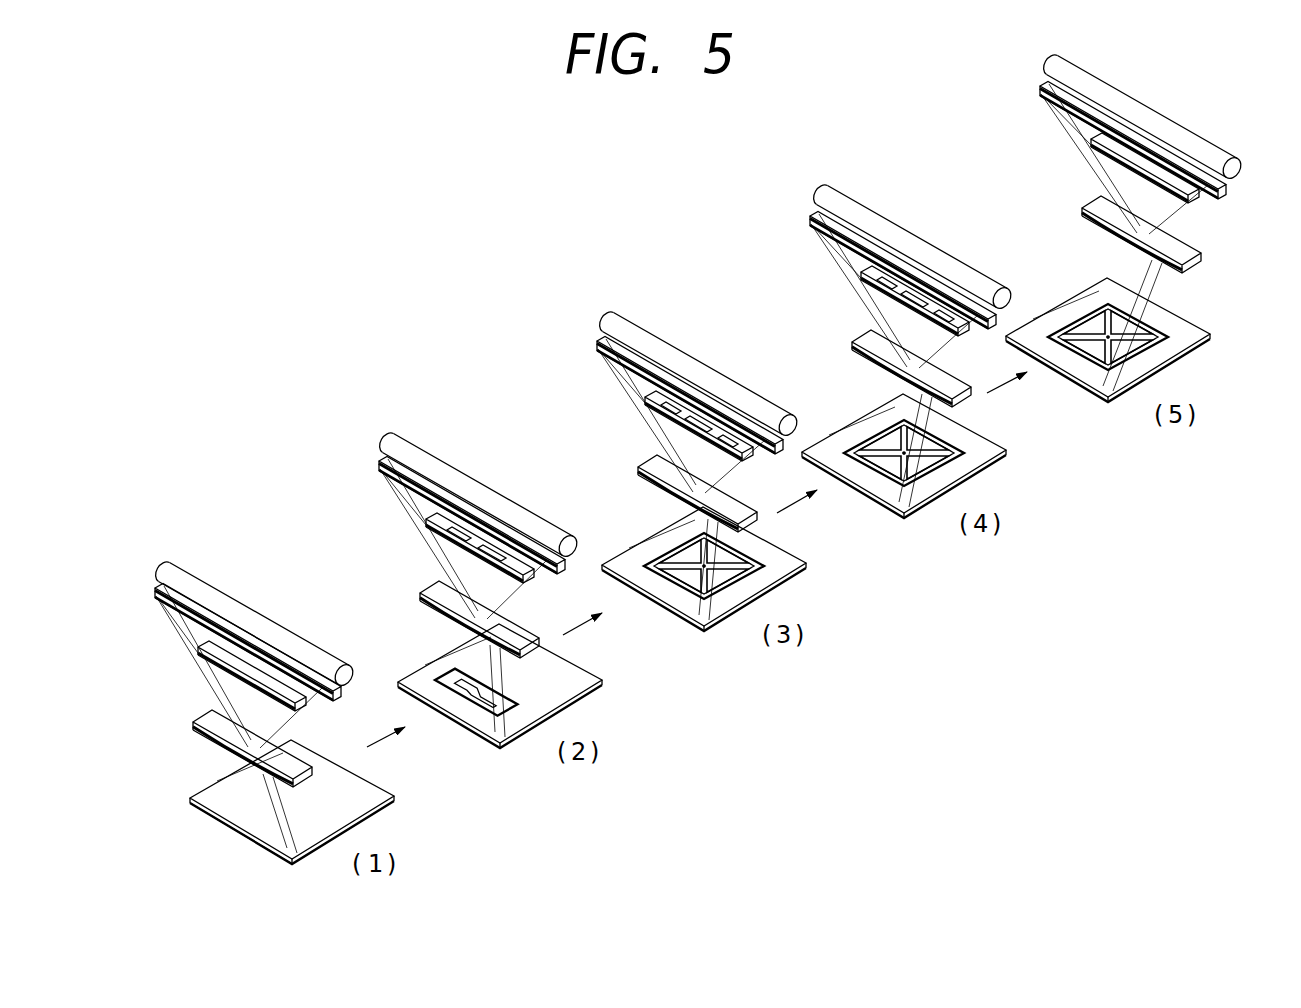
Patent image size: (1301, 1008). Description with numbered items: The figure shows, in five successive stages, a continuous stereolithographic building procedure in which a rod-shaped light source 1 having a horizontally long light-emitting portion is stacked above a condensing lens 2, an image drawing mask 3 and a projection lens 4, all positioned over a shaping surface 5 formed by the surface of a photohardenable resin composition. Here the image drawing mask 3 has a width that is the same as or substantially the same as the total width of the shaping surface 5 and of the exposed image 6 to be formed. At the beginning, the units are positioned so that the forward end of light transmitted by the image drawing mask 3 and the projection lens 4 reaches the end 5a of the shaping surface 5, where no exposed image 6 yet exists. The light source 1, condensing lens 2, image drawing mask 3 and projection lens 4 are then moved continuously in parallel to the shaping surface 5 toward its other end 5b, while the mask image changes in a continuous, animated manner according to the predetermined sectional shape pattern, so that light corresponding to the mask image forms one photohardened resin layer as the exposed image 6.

The light source 1 is at (226, 603).
The condensing lens 2 is at (172, 604).
The image drawing mask 3 is at (228, 661).
The projection lens 4 is at (224, 728).
The shaping surface 5 is at (362, 798).
The one end of the shaping surface 5a is at (245, 835).
The other end of the shaping surface 5b is at (1208, 333).
The exposed image 6 is at (447, 668).